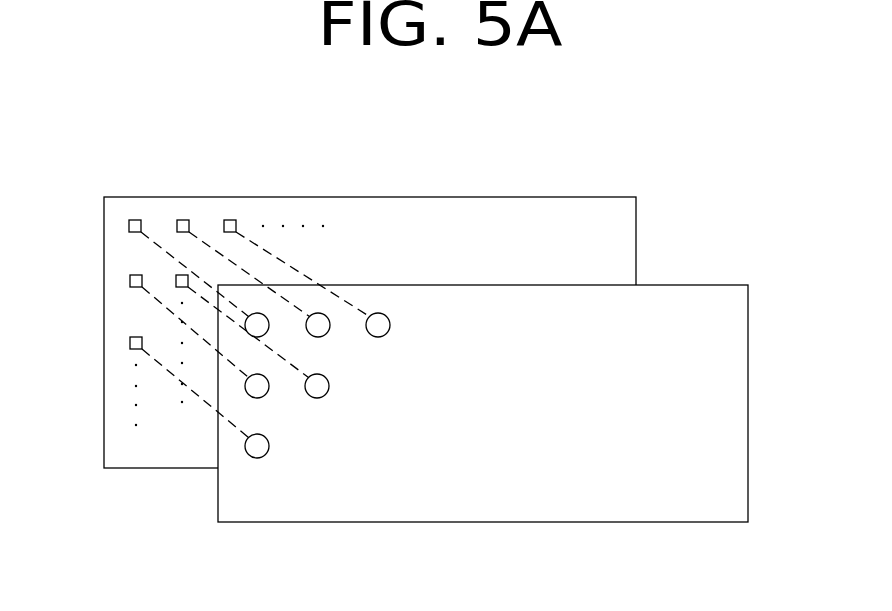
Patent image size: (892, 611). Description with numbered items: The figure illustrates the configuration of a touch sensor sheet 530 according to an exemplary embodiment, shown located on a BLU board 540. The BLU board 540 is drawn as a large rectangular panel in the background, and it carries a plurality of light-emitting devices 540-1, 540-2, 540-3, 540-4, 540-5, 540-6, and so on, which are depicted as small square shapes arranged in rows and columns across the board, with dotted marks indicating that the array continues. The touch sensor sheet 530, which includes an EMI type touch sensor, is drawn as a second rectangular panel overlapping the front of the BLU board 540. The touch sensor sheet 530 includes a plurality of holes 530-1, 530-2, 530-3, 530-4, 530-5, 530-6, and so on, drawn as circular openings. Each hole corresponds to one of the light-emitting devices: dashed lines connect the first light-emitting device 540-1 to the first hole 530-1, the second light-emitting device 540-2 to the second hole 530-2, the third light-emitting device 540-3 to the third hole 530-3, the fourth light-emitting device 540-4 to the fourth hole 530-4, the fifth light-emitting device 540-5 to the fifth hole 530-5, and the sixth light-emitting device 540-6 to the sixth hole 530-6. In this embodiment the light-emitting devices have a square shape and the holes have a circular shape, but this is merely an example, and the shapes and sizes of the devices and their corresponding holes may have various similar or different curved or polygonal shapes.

The BLU board 540 is at (601, 197).
The touch sensor sheet 530 is at (712, 285).
The light-emitting device 540-1 is at (135, 220).
The light-emitting device 540-2 is at (183, 220).
The light-emitting device 540-3 is at (230, 220).
The light-emitting device 540-4 is at (130, 280).
The light-emitting device 540-5 is at (178, 275).
The light-emitting device 540-6 is at (130, 341).
The hole 530-1 is at (266, 315).
The hole 530-2 is at (327, 315).
The hole 530-3 is at (388, 316).
The hole 530-4 is at (266, 395).
The hole 530-5 is at (326, 395).
The hole 530-6 is at (253, 458).